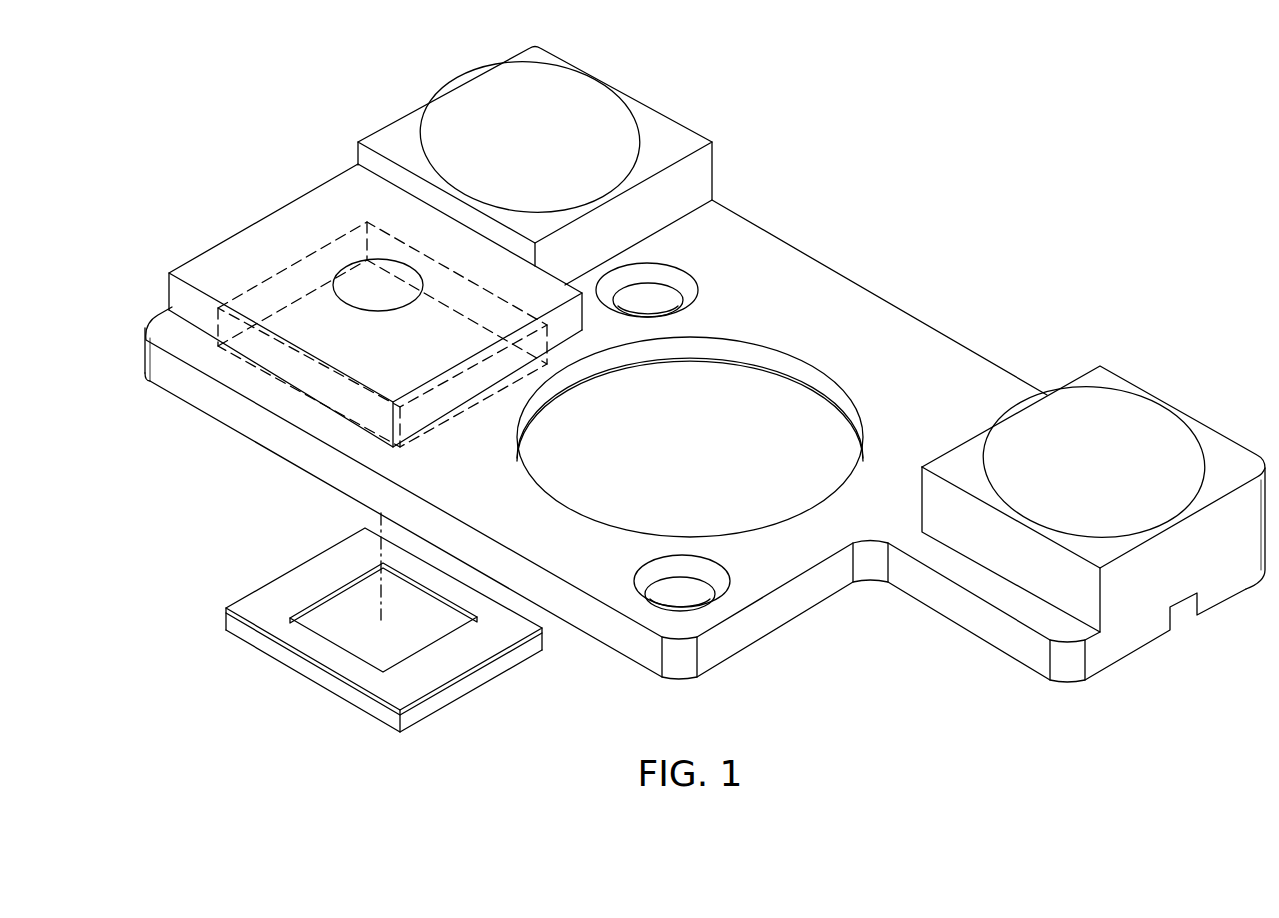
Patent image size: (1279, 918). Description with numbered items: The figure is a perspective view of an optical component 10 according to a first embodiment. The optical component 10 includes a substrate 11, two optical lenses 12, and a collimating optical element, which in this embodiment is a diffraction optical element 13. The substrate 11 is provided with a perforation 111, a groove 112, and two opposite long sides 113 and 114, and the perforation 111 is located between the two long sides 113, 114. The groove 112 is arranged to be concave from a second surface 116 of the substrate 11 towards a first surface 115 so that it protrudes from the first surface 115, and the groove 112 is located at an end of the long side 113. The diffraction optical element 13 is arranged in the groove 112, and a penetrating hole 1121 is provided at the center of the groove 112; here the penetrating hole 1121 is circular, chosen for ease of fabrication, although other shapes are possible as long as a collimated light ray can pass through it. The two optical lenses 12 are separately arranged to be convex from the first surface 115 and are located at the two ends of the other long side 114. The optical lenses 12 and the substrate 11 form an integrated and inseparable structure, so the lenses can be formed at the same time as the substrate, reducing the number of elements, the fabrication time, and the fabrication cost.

The optical component 10 is at (1080, 153).
The substrate 11 is at (955, 397).
The perforation 111 is at (777, 363).
The groove 112 is at (212, 272).
The penetrating hole 1121 is at (353, 288).
The long side 113 is at (225, 410).
The long side 114 is at (899, 305).
The first surface 115 is at (742, 290).
The second surface 116 is at (290, 463).
The optical lens 12 is at (493, 102).
The diffraction optical element 13 is at (293, 587).